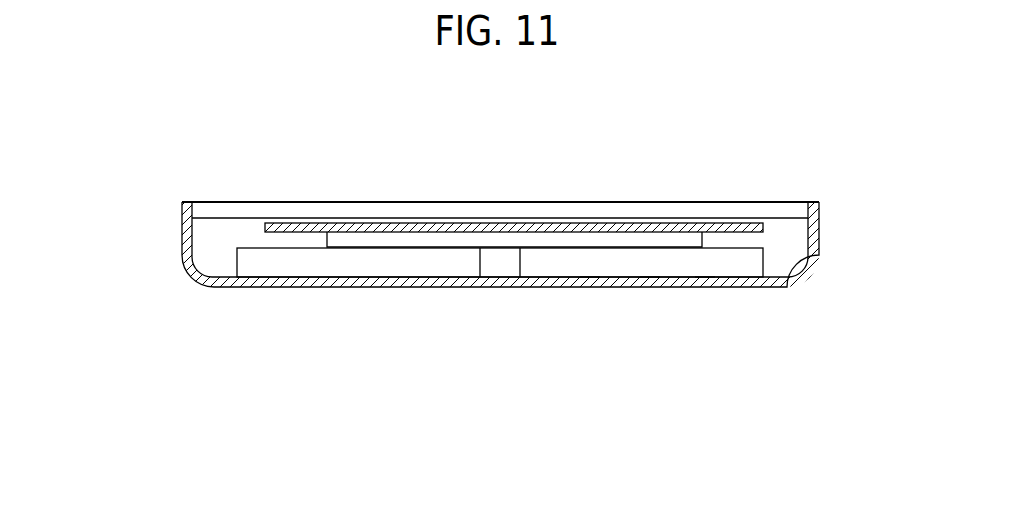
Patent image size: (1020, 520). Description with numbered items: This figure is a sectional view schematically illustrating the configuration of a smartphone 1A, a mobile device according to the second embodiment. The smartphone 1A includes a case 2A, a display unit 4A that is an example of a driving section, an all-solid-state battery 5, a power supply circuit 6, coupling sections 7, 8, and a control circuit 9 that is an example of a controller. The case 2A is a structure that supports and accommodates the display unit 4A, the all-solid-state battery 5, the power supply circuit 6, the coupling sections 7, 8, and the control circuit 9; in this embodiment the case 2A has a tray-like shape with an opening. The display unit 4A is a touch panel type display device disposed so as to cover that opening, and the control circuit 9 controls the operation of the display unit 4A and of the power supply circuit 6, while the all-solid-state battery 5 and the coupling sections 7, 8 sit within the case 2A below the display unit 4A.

The smartphone 1A is at (740, 158).
The case 2A is at (182, 240).
The display unit 4A is at (528, 202).
The control circuit 9 is at (618, 210).
The all-solid-state battery 5 is at (360, 281).
The power supply circuit 6 is at (591, 283).
The coupling section 7 is at (651, 284).
The coupling section 8 is at (706, 284).